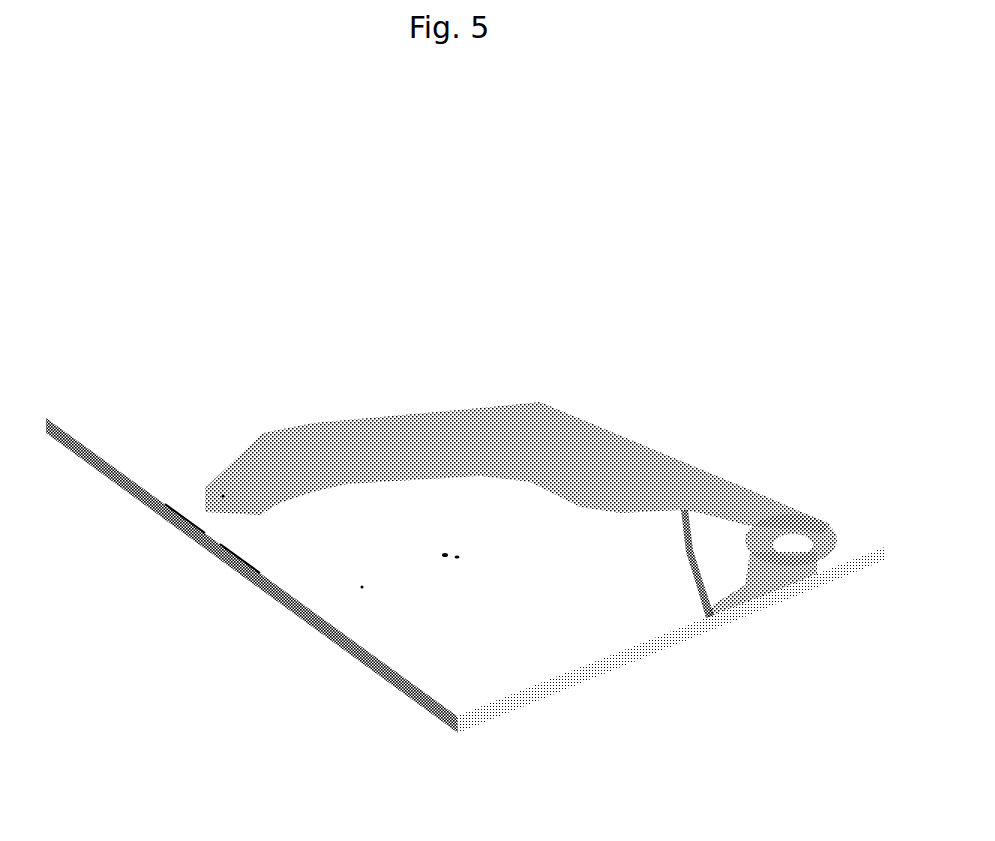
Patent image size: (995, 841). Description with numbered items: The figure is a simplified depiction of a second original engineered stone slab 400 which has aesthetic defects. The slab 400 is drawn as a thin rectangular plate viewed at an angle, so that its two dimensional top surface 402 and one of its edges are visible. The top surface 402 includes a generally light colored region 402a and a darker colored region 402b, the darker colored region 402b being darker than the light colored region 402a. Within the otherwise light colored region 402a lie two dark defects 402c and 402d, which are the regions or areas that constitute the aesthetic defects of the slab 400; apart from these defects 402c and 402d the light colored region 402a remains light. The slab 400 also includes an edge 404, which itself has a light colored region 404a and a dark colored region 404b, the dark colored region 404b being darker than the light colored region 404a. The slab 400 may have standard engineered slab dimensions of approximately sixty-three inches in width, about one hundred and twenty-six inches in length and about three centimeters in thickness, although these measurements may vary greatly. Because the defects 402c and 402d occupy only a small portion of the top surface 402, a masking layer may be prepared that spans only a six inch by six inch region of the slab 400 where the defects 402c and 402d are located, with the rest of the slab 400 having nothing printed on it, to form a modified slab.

The second original engineered stone slab 400 is at (462, 532).
The two dimensional top surface 402 is at (438, 601).
The light colored region 402a is at (362, 587).
The darker colored region 402b is at (223, 496).
The dark defect 402c is at (448, 565).
The dark defect 402d is at (460, 560).
The edge 404 is at (465, 580).
The light colored region 404a is at (240, 568).
The dark colored region 404b is at (185, 528).